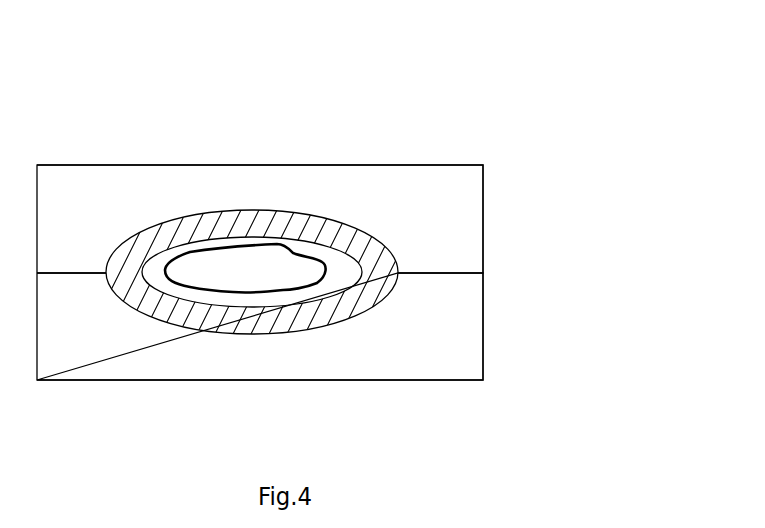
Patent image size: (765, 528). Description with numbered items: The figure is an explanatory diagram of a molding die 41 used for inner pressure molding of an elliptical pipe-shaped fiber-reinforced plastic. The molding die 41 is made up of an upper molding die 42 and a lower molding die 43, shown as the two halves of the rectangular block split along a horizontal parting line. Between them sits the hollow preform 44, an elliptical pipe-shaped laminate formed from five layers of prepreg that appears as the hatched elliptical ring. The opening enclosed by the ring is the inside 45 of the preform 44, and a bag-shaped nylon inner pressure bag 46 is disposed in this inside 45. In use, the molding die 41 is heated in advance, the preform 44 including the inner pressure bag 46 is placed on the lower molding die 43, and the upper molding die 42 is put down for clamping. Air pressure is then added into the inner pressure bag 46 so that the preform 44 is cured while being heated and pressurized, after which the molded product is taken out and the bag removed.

The molding die 41 is at (464, 128).
The upper molding die 42 is at (452, 220).
The lower molding die 43 is at (452, 352).
The hollow preform 44 is at (160, 248).
The inside of the preform 45 is at (333, 277).
The inner pressure bag 46 is at (233, 285).